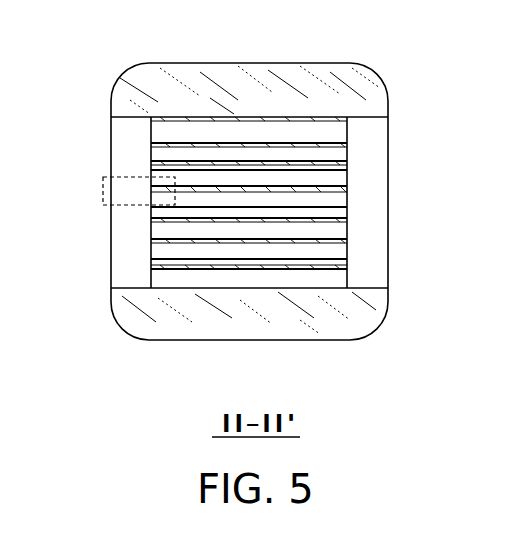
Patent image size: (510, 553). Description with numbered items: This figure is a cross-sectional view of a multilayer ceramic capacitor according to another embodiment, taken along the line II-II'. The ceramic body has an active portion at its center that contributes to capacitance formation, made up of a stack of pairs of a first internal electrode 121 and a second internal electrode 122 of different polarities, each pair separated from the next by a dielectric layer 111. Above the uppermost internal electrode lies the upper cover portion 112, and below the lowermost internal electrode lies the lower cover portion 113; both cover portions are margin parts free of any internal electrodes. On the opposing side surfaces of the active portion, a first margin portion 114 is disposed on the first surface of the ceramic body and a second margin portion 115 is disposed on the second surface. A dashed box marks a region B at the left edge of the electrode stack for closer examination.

The dielectric layer 111 is at (350, 152).
The upper cover portion 112 is at (240, 72).
The lower cover portion 113 is at (250, 336).
The first margin portion 114 is at (116, 250).
The second margin portion 115 is at (372, 208).
The first internal electrode 121 is at (150, 120).
The second internal electrode 122 is at (150, 147).
The detail region B is at (103, 190).